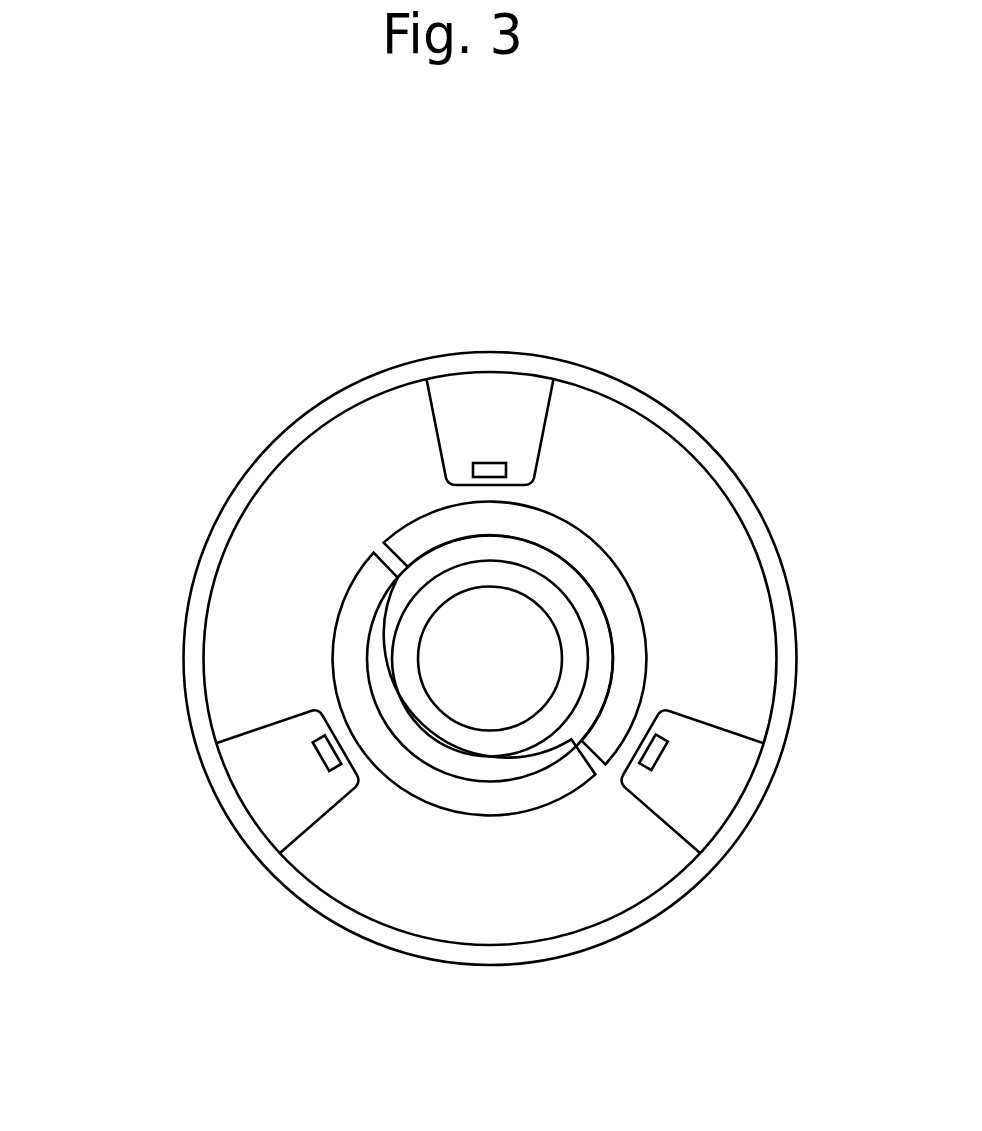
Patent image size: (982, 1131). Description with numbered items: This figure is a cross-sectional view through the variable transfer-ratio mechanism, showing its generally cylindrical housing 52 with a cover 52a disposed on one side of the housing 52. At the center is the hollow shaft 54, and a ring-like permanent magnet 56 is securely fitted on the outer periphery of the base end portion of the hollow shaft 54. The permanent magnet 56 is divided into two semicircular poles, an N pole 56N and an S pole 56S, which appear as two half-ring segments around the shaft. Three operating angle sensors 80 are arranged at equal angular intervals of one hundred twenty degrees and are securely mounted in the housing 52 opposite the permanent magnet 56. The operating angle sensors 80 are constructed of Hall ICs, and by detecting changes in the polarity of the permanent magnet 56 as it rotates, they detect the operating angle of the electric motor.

The housing 52 is at (710, 460).
The cover 52a is at (562, 630).
The hollow shaft 54 is at (550, 563).
The permanent magnet 56 is at (347, 617).
The S pole 56S is at (403, 523).
The N pole 56N is at (352, 583).
The operating angle sensor 80 is at (490, 463).